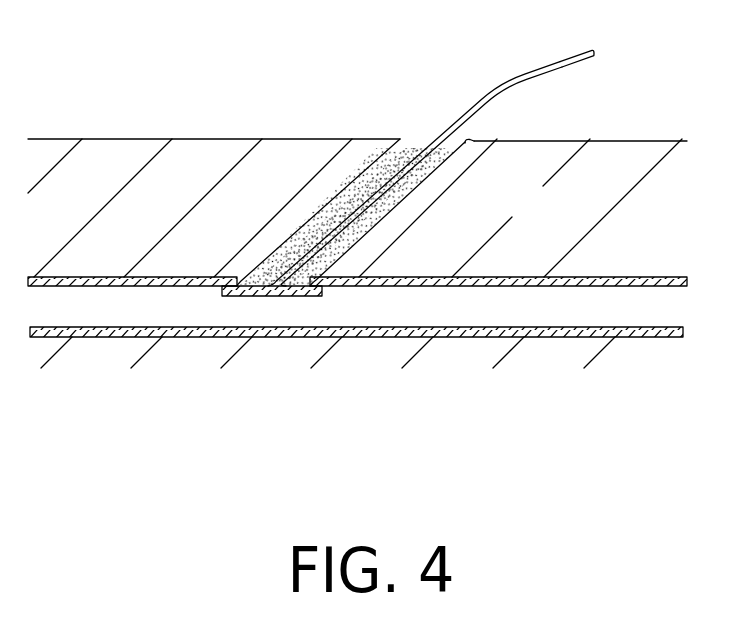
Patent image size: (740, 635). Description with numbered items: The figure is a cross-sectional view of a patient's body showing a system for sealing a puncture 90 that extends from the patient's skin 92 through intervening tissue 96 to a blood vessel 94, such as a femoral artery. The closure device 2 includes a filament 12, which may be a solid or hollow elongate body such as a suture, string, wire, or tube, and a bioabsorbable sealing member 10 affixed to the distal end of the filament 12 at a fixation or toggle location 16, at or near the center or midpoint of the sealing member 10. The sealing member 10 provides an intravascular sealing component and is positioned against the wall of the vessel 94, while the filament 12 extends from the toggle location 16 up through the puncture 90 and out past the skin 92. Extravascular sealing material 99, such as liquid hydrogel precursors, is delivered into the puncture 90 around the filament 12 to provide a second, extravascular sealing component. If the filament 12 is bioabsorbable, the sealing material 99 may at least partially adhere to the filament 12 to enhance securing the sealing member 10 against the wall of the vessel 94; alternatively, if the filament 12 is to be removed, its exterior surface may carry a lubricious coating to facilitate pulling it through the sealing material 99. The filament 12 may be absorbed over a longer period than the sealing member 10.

The closure device 2 is at (478, 151).
The sealing member 10 is at (294, 297).
The filament 12 is at (478, 151).
The toggle location 16 is at (272, 286).
The puncture 90 is at (468, 139).
The skin 92 is at (616, 140).
The blood vessel 94 is at (558, 337).
The tissue 96 is at (357, 212).
The sealing material 99 is at (343, 192).